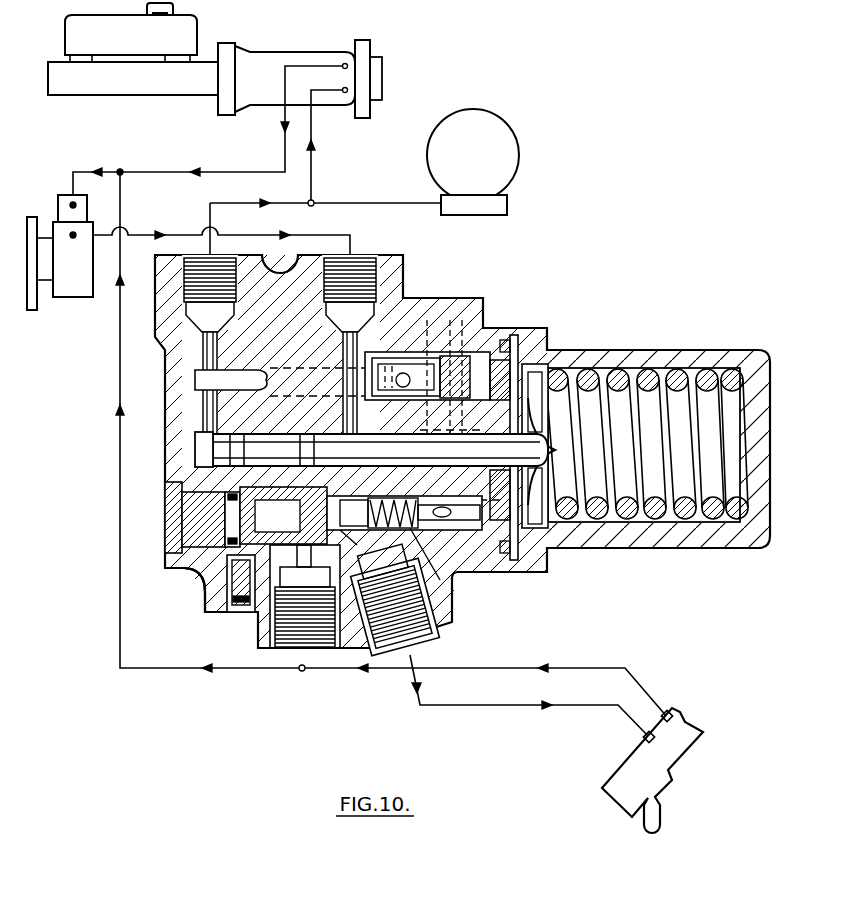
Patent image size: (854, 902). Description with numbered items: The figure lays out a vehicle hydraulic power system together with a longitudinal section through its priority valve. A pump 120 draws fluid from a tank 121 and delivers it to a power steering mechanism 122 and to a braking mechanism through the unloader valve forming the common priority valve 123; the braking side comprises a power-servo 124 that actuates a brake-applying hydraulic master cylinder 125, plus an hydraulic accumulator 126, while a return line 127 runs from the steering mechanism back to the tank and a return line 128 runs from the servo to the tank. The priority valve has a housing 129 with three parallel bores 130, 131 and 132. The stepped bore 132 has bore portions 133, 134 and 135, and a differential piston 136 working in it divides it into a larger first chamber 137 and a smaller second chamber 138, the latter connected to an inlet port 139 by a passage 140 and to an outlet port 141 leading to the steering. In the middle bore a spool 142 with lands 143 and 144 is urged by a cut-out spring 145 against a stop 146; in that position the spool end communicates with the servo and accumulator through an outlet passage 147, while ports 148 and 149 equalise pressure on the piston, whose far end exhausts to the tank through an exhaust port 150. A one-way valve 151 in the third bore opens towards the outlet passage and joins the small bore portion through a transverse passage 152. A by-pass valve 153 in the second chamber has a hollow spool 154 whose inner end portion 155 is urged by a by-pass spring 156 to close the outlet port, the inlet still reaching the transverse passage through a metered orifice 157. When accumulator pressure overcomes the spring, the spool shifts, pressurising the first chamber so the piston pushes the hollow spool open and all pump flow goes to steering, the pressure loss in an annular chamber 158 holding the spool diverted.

The pump 120 is at (73, 280).
The tank 121 is at (62, 200).
The power steering mechanism 122 is at (622, 796).
The priority valve 123 is at (514, 330).
The power-servo 124 is at (299, 58).
The brake-applying hydraulic master cylinder 125 is at (203, 70).
The hydraulic accumulator 126 is at (506, 161).
The return line 127 is at (600, 667).
The return line 128 is at (240, 171).
The housing 129 is at (188, 562).
The bore 130 is at (200, 383).
The bore 131 is at (195, 458).
The bore 132 is at (183, 539).
The bore portion 133 is at (243, 598).
The bore portion 134 is at (370, 630).
The bore portion 135 is at (400, 522).
The differential piston 136 is at (205, 593).
The first chamber 137 is at (232, 500).
The second chamber 138 is at (385, 605).
The inlet port 139 is at (360, 280).
The passage 140 is at (355, 345).
The outlet port 141 is at (406, 632).
The spool 142 is at (342, 430).
The land 143 is at (238, 437).
The land 144 is at (305, 437).
The cut-out spring 145 is at (700, 352).
The stop 146 is at (198, 440).
The outlet passage 147 is at (203, 408).
The port 148 is at (180, 483).
The port 149 is at (303, 590).
The exhaust port 150 is at (273, 598).
The one-way valve 151 is at (425, 372).
The transverse passage 152 is at (522, 555).
The by-pass valve 153 is at (415, 585).
The hollow spool 154 is at (428, 525).
The inner end portion 155 is at (357, 533).
The by-pass spring 156 is at (503, 556).
The metered orifice 157 is at (405, 560).
The annular chamber 158 is at (477, 340).